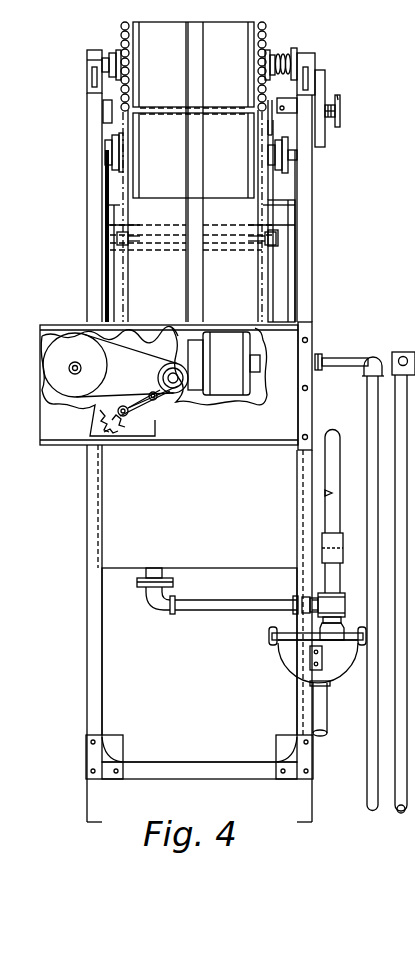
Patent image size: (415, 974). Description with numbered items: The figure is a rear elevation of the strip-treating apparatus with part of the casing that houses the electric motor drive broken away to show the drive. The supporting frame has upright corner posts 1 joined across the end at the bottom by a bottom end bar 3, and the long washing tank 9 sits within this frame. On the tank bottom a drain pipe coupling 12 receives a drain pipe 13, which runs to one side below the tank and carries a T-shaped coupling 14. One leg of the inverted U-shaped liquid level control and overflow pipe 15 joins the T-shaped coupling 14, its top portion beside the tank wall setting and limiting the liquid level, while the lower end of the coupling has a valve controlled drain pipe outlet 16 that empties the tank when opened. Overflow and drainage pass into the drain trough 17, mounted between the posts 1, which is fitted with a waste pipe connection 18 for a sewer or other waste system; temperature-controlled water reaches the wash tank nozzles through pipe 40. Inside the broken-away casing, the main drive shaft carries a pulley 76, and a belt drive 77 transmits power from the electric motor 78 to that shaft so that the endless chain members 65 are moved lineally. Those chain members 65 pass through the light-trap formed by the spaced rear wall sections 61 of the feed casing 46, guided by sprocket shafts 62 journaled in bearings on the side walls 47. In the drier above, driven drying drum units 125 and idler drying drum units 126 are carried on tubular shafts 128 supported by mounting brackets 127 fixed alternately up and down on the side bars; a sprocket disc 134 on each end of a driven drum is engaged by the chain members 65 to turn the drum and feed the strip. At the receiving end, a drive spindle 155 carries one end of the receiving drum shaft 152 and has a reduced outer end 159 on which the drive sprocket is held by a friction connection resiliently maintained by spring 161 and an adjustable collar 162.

The corner post 1 is at (93, 239).
The bottom end bar 3 is at (196, 770).
The washing tank 9 is at (128, 568).
The drain pipe coupling 12 is at (156, 578).
The drain pipe 13 is at (236, 600).
The T-shaped coupling 14 is at (338, 598).
The inverted U-shaped liquid level control and overflow pipe 15 is at (331, 435).
The valve controlled drain pipe outlet 16 is at (329, 641).
The drain trough 17 is at (290, 658).
The waste pipe connection 18 is at (320, 720).
The pipe 40 is at (365, 390).
The feed casing 46 is at (279, 214).
The side wall 47 is at (105, 273).
The rear wall section 61 is at (280, 292).
The sprocket shaft 62 is at (279, 247).
The endless chain member 65 is at (128, 303).
The pulley 76 is at (109, 381).
The belt drive 77 is at (173, 393).
The electric motor 78 is at (219, 366).
The driven drying drum unit 125 is at (195, 59).
The idler drying drum unit 126 is at (194, 167).
The mounting bracket 127 is at (92, 60).
The tubular shaft 128 is at (107, 58).
The sprocket disc 134 is at (121, 25).
The shaft 152 is at (271, 112).
The drive spindle 155 is at (286, 100).
The reduced outer end 159 is at (341, 110).
The spring 161 is at (328, 118).
The collar 162 is at (338, 95).